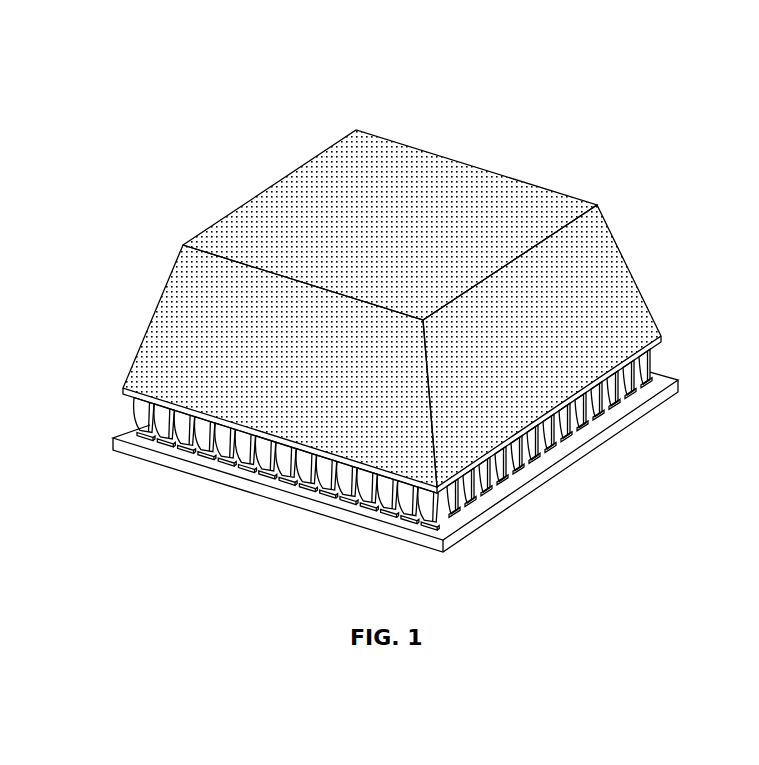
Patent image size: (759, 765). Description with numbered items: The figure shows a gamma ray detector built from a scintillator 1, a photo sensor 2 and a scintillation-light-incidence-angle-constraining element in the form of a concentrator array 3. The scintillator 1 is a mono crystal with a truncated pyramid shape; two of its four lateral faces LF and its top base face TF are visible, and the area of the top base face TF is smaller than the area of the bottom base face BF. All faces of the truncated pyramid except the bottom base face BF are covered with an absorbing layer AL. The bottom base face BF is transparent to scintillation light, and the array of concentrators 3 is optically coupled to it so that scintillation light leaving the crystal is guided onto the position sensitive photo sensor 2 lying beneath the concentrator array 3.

The scintillator 1 is at (414, 303).
The photo sensor 2 is at (130, 433).
The concentrator array 3 is at (643, 362).
The absorbing layer AL is at (309, 184).
The top base face TF is at (537, 200).
The lateral face LF is at (173, 286).
The bottom base face BF is at (655, 343).